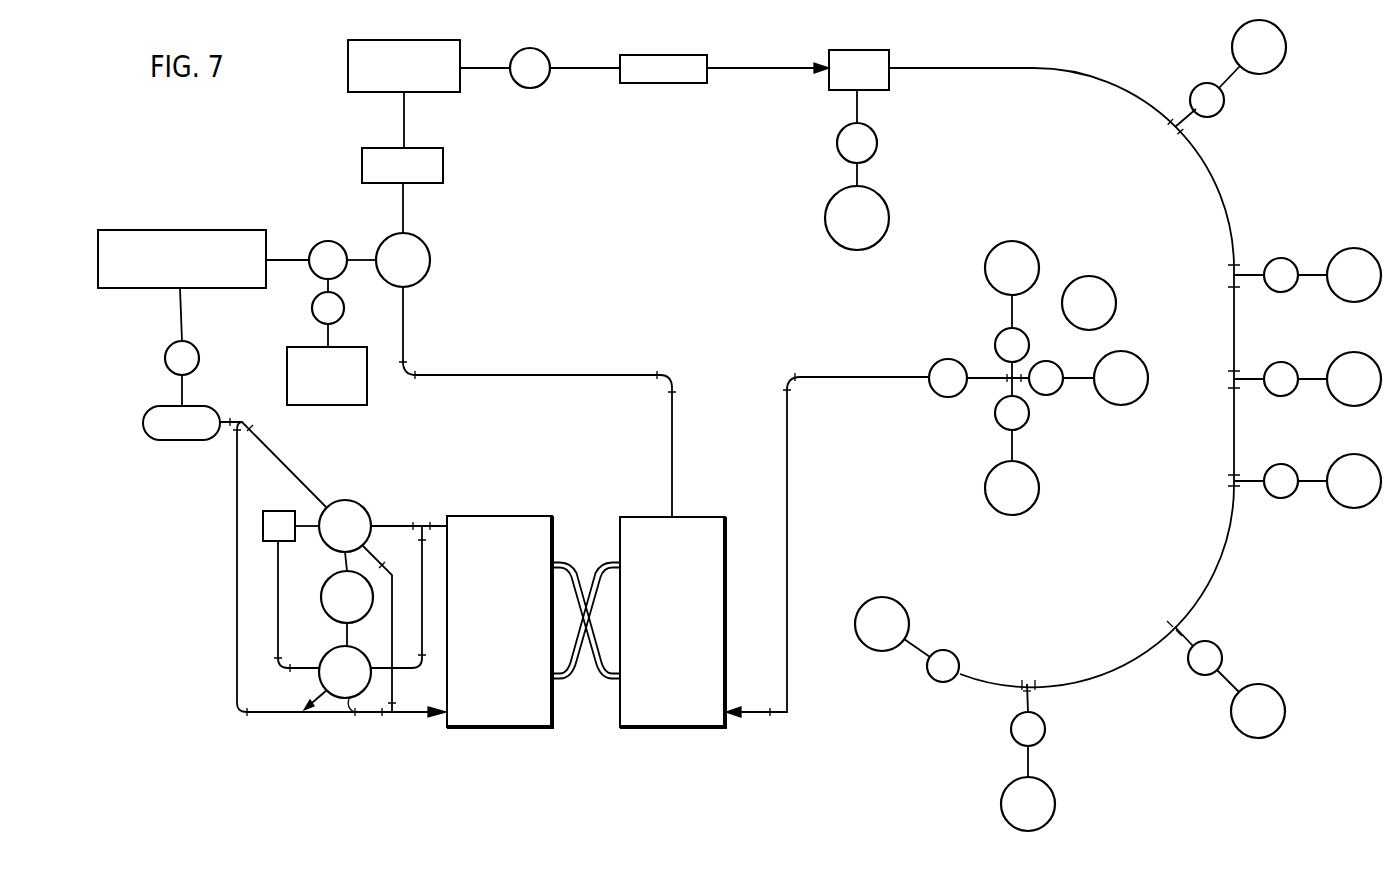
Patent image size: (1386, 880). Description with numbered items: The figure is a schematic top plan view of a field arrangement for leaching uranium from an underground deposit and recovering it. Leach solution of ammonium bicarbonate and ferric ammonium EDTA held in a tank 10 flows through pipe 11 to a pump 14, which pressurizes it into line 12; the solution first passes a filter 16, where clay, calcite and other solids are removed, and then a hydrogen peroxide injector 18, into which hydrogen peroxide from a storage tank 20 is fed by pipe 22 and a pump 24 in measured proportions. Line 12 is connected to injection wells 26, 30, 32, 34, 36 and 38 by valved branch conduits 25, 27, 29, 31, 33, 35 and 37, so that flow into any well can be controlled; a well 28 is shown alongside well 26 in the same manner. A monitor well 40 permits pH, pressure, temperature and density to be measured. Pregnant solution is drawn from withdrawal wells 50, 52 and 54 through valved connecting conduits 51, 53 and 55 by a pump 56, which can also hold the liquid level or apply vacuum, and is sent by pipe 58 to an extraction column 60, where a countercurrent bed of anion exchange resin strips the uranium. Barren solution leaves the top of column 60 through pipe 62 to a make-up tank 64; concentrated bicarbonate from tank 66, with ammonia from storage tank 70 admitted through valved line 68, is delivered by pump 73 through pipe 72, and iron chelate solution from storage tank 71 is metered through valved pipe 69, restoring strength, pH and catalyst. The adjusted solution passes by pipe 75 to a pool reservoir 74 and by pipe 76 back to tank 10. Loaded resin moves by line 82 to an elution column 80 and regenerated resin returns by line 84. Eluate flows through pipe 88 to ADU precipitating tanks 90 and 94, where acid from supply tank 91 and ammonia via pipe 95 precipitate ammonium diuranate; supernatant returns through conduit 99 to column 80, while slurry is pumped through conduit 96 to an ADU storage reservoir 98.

The tank 10 is at (373, 40).
The pipe 11 is at (480, 68).
The line 12 is at (565, 68).
The pump 14 is at (544, 84).
The filter 16 is at (665, 83).
The hydrogen peroxide injector 18 is at (857, 50).
The storage tank 20 is at (857, 250).
The pipe 22 is at (856, 176).
The pump 24 is at (877, 139).
The branch conduit 25 is at (1064, 379).
The injection well 26 is at (1274, 73).
The branch conduit 27 is at (1252, 274).
The tank 28 is at (1355, 248).
The branch conduit 29 is at (1249, 378).
The injection well 30 is at (1350, 352).
The branch conduit 31 is at (1250, 480).
The injection well 32 is at (1341, 454).
The branch conduit 33 is at (1190, 637).
The injection well 34 is at (1288, 676).
The branch conduit 35 is at (1029, 699).
The injection well 36 is at (1054, 790).
The branch conduit 37 is at (913, 653).
The injection well 38 is at (903, 607).
The monitor well 40 is at (1116, 298).
The withdrawal well 50 is at (1033, 211).
The valved connecting conduit 51 is at (1011, 315).
The withdrawal well 52 is at (1030, 510).
The valved connecting conduit 53 is at (1008, 385).
The withdrawal well 54 is at (1140, 397).
The valved connecting conduit 55 is at (1021, 383).
The pump 56 is at (938, 362).
The pipe 58 is at (788, 452).
The extraction column 60 is at (703, 516).
The pipe 62 is at (558, 376).
The make-up tank 64 is at (421, 278).
The tank 66 is at (182, 230).
The valved line 68 is at (183, 388).
The valved pipe 69 is at (340, 318).
The storage tank 70 is at (182, 440).
The storage tank 71 is at (355, 405).
The pipe 72 is at (360, 262).
The pump 73 is at (326, 241).
The pool reservoir 74 is at (362, 168).
The pipe 75 is at (402, 217).
The pipe 76 is at (403, 126).
The elution column 80 is at (528, 514).
The line 82 is at (563, 566).
The line 84 is at (571, 671).
The pipe 88 is at (413, 713).
The ADU precipitating tank 90 is at (344, 698).
The supply tank 91 is at (329, 619).
The ADU precipitating tank 94 is at (363, 507).
The pipe 95 is at (293, 470).
The conduit 96 is at (305, 526).
The ADU storage reservoir 98 is at (291, 526).
The conduit 99 is at (410, 525).